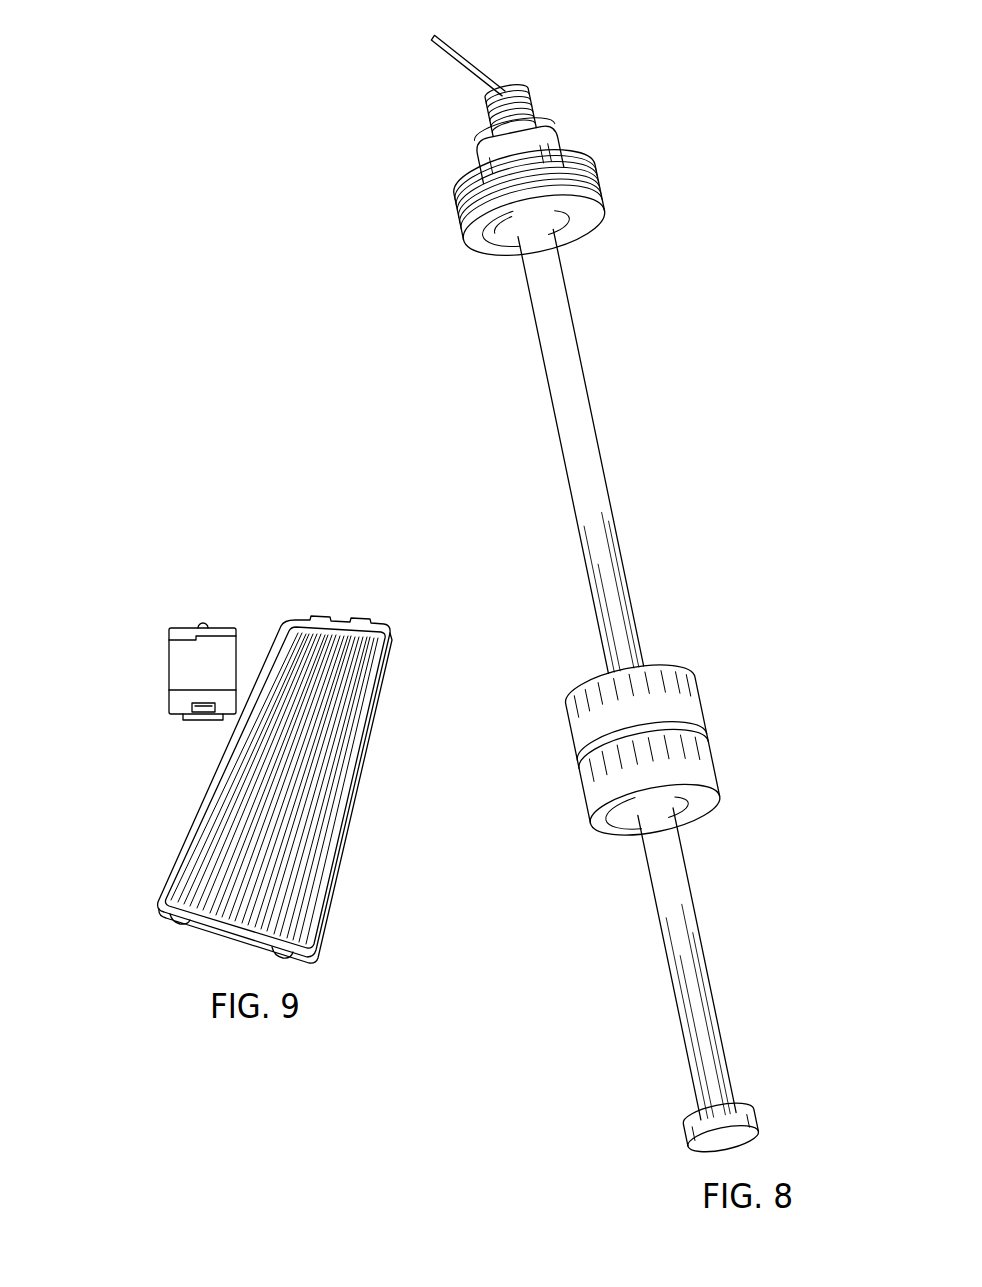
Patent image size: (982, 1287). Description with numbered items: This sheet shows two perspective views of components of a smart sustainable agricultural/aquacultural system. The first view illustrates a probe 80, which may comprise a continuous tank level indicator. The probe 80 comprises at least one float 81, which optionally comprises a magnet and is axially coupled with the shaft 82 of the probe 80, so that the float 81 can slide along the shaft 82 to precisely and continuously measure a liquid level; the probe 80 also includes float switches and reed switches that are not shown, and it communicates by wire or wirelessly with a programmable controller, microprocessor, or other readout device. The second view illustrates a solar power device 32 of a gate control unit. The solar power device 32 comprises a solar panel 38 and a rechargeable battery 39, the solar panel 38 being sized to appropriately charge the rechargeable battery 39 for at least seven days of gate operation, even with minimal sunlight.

In FIG. 8, the probe 80 is at (781, 298).
In FIG. 8, the float 81 is at (702, 719).
In FIG. 8, the shaft 82 is at (571, 499).
In FIG. 9, the solar power device 32 is at (107, 603).
In FIG. 9, the solar panel 38 is at (377, 698).
In FIG. 9, the rechargeable battery 39 is at (169, 662).